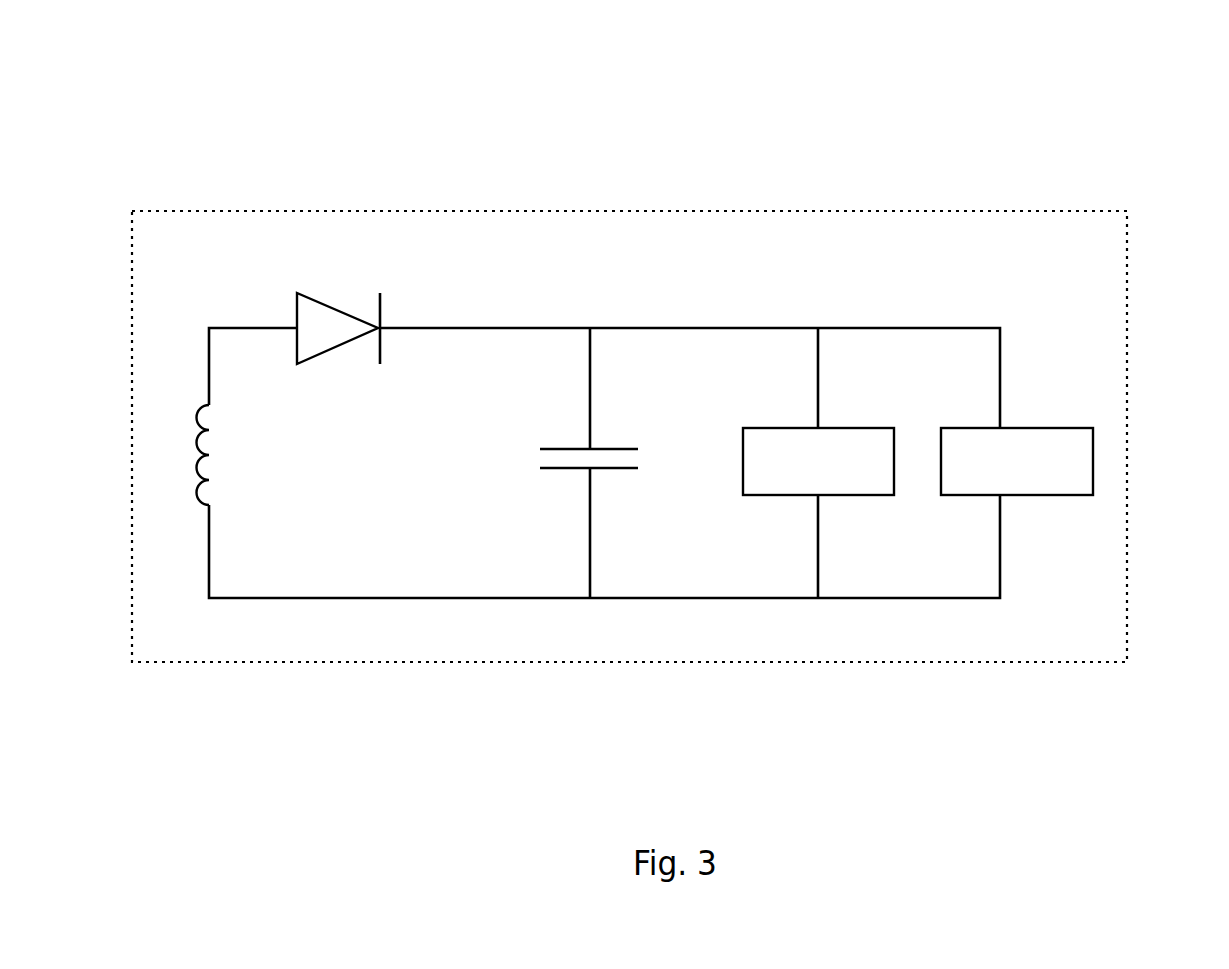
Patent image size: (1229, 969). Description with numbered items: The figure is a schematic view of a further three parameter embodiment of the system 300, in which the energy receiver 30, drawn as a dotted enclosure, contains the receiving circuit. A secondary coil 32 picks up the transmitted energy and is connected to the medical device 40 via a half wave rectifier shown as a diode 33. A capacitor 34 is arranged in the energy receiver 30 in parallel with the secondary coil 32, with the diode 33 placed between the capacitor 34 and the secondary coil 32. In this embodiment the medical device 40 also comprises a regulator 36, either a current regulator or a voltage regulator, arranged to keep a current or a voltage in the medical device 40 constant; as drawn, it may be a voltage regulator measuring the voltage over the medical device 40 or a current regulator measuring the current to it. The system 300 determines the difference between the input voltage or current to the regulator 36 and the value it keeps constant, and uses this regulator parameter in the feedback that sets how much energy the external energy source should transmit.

The system 300 is at (842, 97).
The energy receiver 30 is at (1147, 262).
The secondary coil 32 is at (233, 465).
The diode 33 is at (344, 293).
The capacitor 34 is at (611, 433).
The regulator 36 is at (850, 420).
The medical device 40 is at (1010, 422).